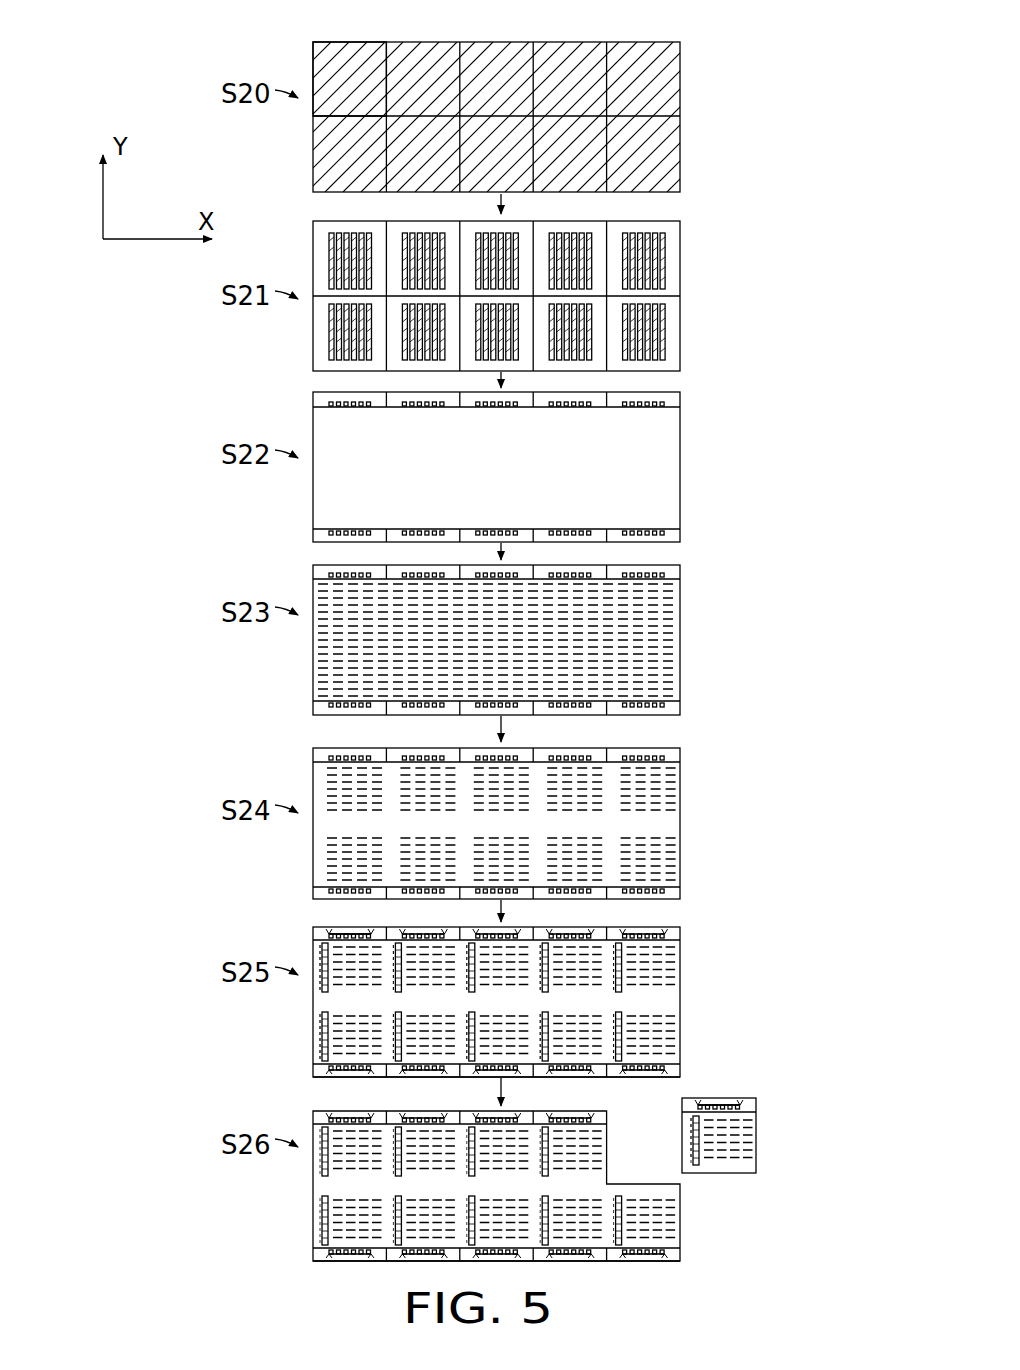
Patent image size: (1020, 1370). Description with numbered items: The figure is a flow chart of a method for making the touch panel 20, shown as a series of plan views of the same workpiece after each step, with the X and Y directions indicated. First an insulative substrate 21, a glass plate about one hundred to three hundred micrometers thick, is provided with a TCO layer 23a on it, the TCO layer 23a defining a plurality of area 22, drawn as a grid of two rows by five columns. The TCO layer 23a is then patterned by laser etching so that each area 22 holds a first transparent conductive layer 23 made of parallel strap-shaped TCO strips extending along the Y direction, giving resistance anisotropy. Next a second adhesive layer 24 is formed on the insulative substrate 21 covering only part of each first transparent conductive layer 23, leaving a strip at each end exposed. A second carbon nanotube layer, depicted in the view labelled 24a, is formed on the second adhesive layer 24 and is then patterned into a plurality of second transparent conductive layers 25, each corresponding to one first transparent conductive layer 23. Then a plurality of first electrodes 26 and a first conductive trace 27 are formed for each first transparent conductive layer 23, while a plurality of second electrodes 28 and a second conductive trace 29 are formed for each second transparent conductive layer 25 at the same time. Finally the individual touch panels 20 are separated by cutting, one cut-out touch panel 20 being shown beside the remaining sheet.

The touch panel 20 is at (694, 1062).
The insulative substrate 21 is at (682, 72).
The area 22 is at (328, 52).
The first transparent conductive layer 23 is at (662, 240).
The TCO layer 23a is at (568, 62).
The second adhesive layer 24 is at (660, 443).
The second conductive layer 24a is at (688, 590).
The second transparent conductive layer 25 is at (668, 795).
The first electrode 26 is at (666, 935).
The first conductive trace 27 is at (665, 934).
The second electrode 28 is at (621, 989).
The second conductive trace 29 is at (619, 992).